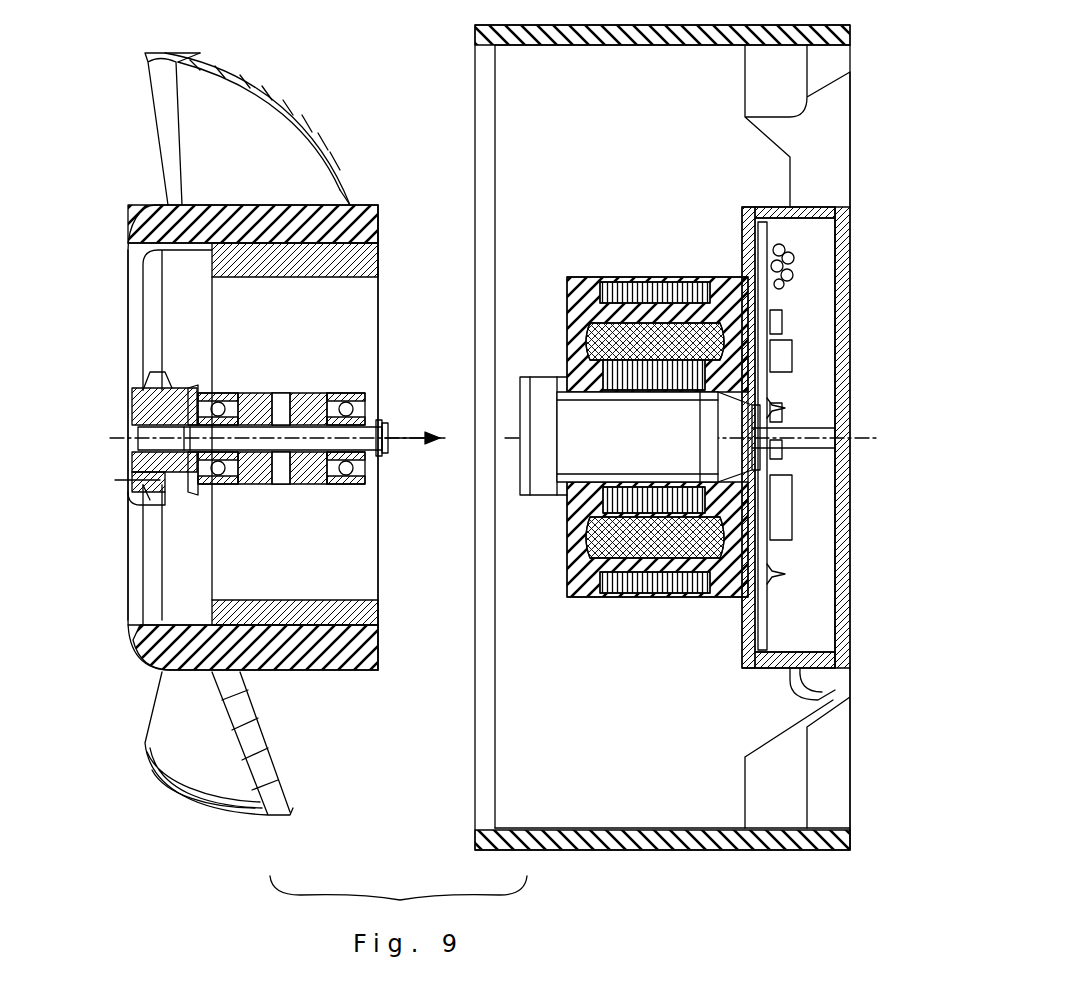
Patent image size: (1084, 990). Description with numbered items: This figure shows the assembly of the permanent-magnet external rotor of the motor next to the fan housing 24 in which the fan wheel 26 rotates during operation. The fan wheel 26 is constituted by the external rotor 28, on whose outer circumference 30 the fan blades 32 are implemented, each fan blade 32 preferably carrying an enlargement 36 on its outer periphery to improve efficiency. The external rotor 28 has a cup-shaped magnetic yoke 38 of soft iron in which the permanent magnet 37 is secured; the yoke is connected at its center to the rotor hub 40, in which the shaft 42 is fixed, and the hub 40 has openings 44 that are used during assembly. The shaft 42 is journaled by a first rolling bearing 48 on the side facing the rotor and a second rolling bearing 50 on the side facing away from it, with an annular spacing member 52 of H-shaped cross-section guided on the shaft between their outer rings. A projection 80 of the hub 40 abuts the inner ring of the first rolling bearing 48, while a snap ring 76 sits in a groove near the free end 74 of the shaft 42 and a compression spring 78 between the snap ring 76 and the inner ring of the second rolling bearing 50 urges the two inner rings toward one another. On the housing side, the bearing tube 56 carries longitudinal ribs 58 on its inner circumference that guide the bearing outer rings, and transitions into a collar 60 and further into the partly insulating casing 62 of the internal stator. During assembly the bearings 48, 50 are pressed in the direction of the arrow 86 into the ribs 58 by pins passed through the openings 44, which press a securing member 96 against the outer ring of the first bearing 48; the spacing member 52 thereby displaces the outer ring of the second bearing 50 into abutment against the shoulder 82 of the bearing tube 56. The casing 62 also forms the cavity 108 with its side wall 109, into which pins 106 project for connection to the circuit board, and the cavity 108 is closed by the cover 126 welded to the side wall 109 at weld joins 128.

The fan housing 24 is at (588, 35).
The fan wheel 26 is at (338, 128).
The external rotor 28 is at (135, 215).
The outer circumference 30 is at (322, 655).
The fan blades 32 is at (250, 160).
The enlargement 36 is at (168, 792).
The permanent magnet 37 is at (265, 605).
The magnetic yoke 38 is at (178, 630).
The rotor hub 40 is at (140, 412).
The shaft 42 is at (262, 420).
The openings 44 is at (115, 480).
The first rolling bearing 48 is at (225, 393).
The second rolling bearing 50 is at (346, 393).
The annular spacing member 52 is at (270, 484).
The bearing tube 56 is at (540, 470).
The longitudinal ribs 58 is at (610, 432).
The collar 60 is at (540, 380).
The insulating casing 62 is at (750, 228).
The free end 74 is at (386, 450).
The snap ring 76 is at (380, 410).
The compression spring 78 is at (346, 484).
The projection 80 is at (180, 388).
The shoulder 82 is at (850, 432).
The arrow 86 is at (430, 455).
The securing member 96 is at (195, 492).
The pins 106 is at (790, 408).
The cavity 108 is at (786, 636).
The side wall 109 is at (785, 212).
The cover 126 is at (840, 515).
The weld joins 128 is at (850, 212).